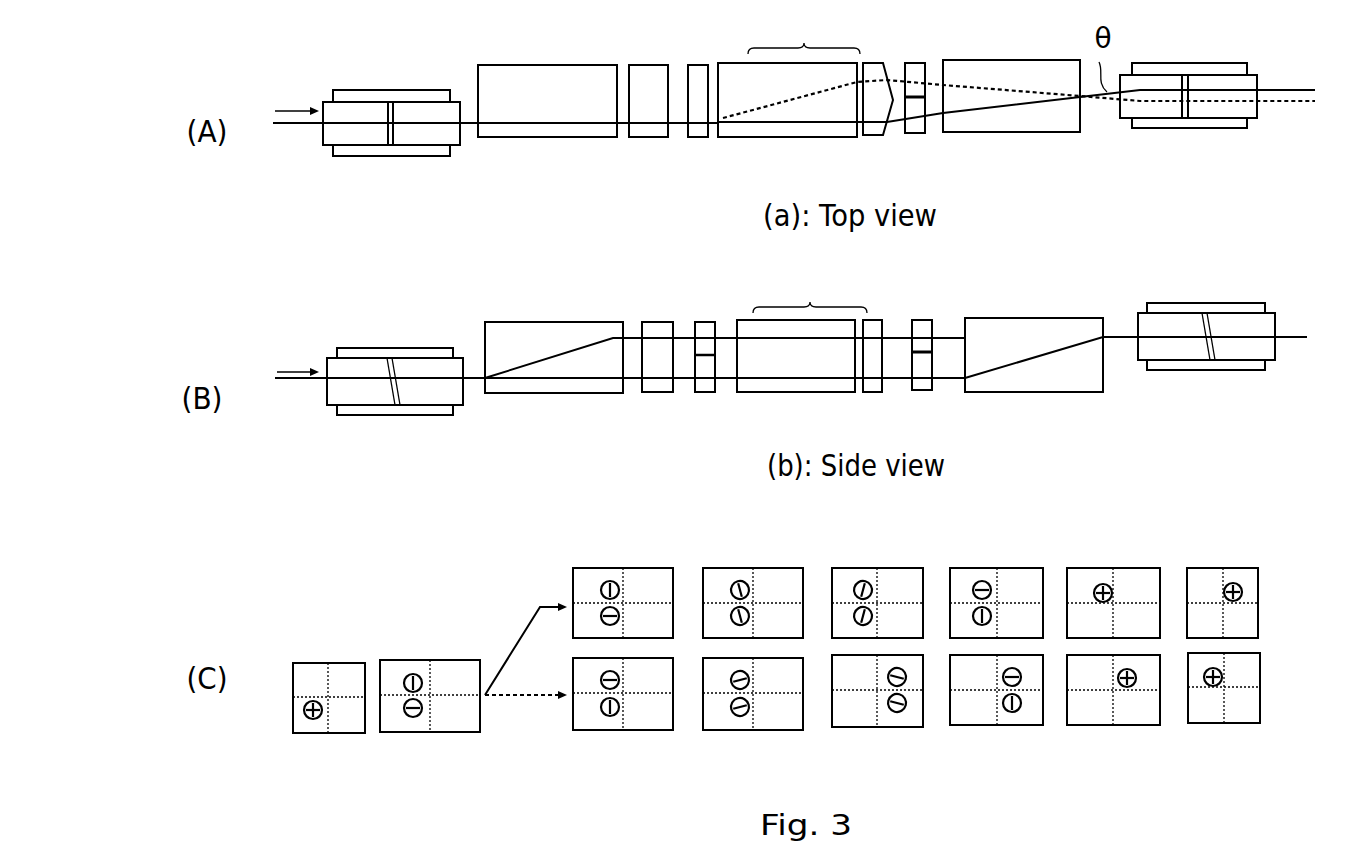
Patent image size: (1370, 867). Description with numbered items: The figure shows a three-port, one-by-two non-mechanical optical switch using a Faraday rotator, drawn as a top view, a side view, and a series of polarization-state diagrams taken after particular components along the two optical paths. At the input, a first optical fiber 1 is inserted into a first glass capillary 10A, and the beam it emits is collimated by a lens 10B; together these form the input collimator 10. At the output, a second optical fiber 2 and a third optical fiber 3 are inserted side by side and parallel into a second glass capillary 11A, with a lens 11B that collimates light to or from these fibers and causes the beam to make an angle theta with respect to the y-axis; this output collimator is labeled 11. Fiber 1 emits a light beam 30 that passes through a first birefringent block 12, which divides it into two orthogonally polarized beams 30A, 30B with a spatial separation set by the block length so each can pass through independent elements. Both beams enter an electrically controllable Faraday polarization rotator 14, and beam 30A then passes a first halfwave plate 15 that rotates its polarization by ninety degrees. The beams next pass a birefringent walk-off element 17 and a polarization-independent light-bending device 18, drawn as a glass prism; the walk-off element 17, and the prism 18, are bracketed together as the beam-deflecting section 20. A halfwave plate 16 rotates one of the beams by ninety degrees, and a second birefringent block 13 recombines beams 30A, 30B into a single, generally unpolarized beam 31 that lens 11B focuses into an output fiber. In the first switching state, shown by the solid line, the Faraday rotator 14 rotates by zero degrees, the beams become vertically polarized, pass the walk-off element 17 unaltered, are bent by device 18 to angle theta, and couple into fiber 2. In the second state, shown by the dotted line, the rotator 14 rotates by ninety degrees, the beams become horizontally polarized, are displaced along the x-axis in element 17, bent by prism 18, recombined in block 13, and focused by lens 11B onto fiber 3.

The first optical fiber 1 is at (375, 146).
The second optical fiber 2 is at (1016, 84).
The third optical fiber 3 is at (1019, 113).
The first glass capillary 10 is at (378, 388).
The first glass capillary 10A is at (358, 142).
The lens 10B is at (423, 140).
The second glass capillary 11 is at (1197, 369).
The second glass capillary 11A is at (1162, 110).
The lens 11B is at (1213, 107).
The first birefringent block 12 is at (501, 374).
The second birefringent block 13 is at (1051, 370).
The Faraday polarization rotator 14 is at (623, 372).
The first halfwave plate 15 is at (739, 397).
The halfwave plate 16 is at (972, 369).
The birefringent walk-off element 17 is at (787, 250).
The polarization-independent light-bending device 18 is at (880, 250).
The beam deflecting unit 20 is at (835, 370).
The light beam 30 is at (553, 123).
The beam 30A is at (552, 378).
The beam 30B is at (600, 338).
The single beam 31 is at (1139, 337).